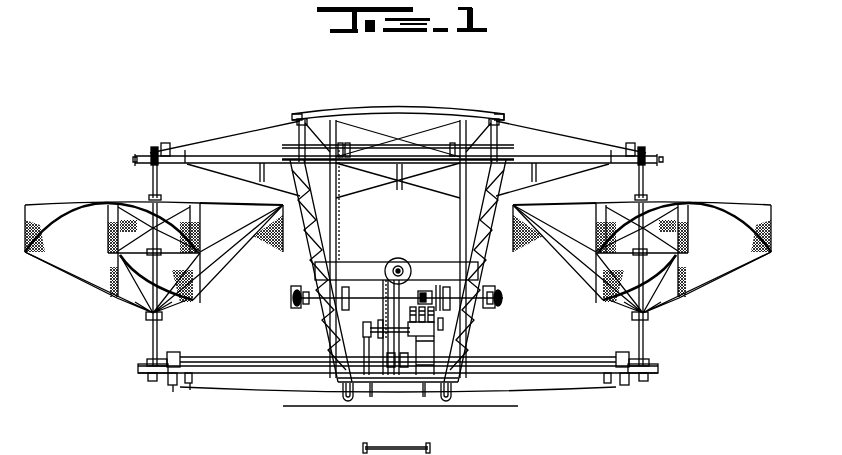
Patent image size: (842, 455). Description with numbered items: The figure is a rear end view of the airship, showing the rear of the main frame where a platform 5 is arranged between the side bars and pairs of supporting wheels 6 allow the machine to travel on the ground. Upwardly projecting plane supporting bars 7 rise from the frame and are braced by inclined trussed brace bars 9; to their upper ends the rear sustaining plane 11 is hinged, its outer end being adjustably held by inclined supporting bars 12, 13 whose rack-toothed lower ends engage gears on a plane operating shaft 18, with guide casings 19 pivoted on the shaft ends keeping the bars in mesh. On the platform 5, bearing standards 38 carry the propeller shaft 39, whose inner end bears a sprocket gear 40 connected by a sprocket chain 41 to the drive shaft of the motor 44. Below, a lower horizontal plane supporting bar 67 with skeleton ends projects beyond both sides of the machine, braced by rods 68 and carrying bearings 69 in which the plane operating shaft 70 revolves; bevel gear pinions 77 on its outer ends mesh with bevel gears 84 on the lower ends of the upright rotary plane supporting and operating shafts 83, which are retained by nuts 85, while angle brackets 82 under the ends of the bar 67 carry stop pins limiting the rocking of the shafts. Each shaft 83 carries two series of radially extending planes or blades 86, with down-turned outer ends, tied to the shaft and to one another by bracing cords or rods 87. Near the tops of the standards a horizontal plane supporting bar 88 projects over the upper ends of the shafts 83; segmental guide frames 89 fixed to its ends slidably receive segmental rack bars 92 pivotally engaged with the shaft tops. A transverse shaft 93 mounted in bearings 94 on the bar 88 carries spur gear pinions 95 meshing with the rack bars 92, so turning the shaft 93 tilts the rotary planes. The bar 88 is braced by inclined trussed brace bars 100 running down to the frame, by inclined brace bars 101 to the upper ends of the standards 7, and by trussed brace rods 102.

The platform 5 is at (406, 384).
The supporting wheels 6 is at (346, 400).
The plane supporting bars 7 is at (318, 114).
The inclined trussed brace bars 9 is at (342, 212).
The rear sustaining plane 11 is at (408, 106).
The inclined supporting bars 12 is at (294, 307).
The inclined supporting bars 13 is at (305, 306).
The plane operating shaft 18 is at (363, 296).
The guide casings 19 is at (291, 293).
The bearing standards 38 is at (395, 433).
The propeller shaft 39 is at (404, 265).
The sprocket gear 40 is at (468, 270).
The sprocket chain 41 is at (380, 301).
The motor 44 is at (435, 324).
The lower plane supporting bar 67 is at (262, 380).
The brace rods 68 is at (235, 373).
The bearings 69 is at (178, 354).
The plane operating shaft 70 is at (230, 365).
The bevel gear pinions 77 is at (165, 358).
The angle brackets 82 is at (178, 388).
The rotary plane supporting and operating shafts 83 is at (150, 338).
The bevel gears 84 is at (148, 368).
The retaining nuts 85 is at (152, 381).
The radially extending planes or blades 86 is at (40, 212).
The bracing cords or rods 87 is at (85, 276).
The plane supporting bar 88 is at (228, 160).
The segmental guide frames 89 is at (150, 156).
The segmental rack bars 92 is at (152, 168).
The transversely disposed shaft 93 is at (186, 150).
The bearings 94 is at (168, 144).
The spur gear pinions 95 is at (154, 146).
The inclined trussed brace bars 100 is at (285, 198).
The inclined brace bars 101 is at (278, 132).
The trussed brace rods 102 is at (425, 170).